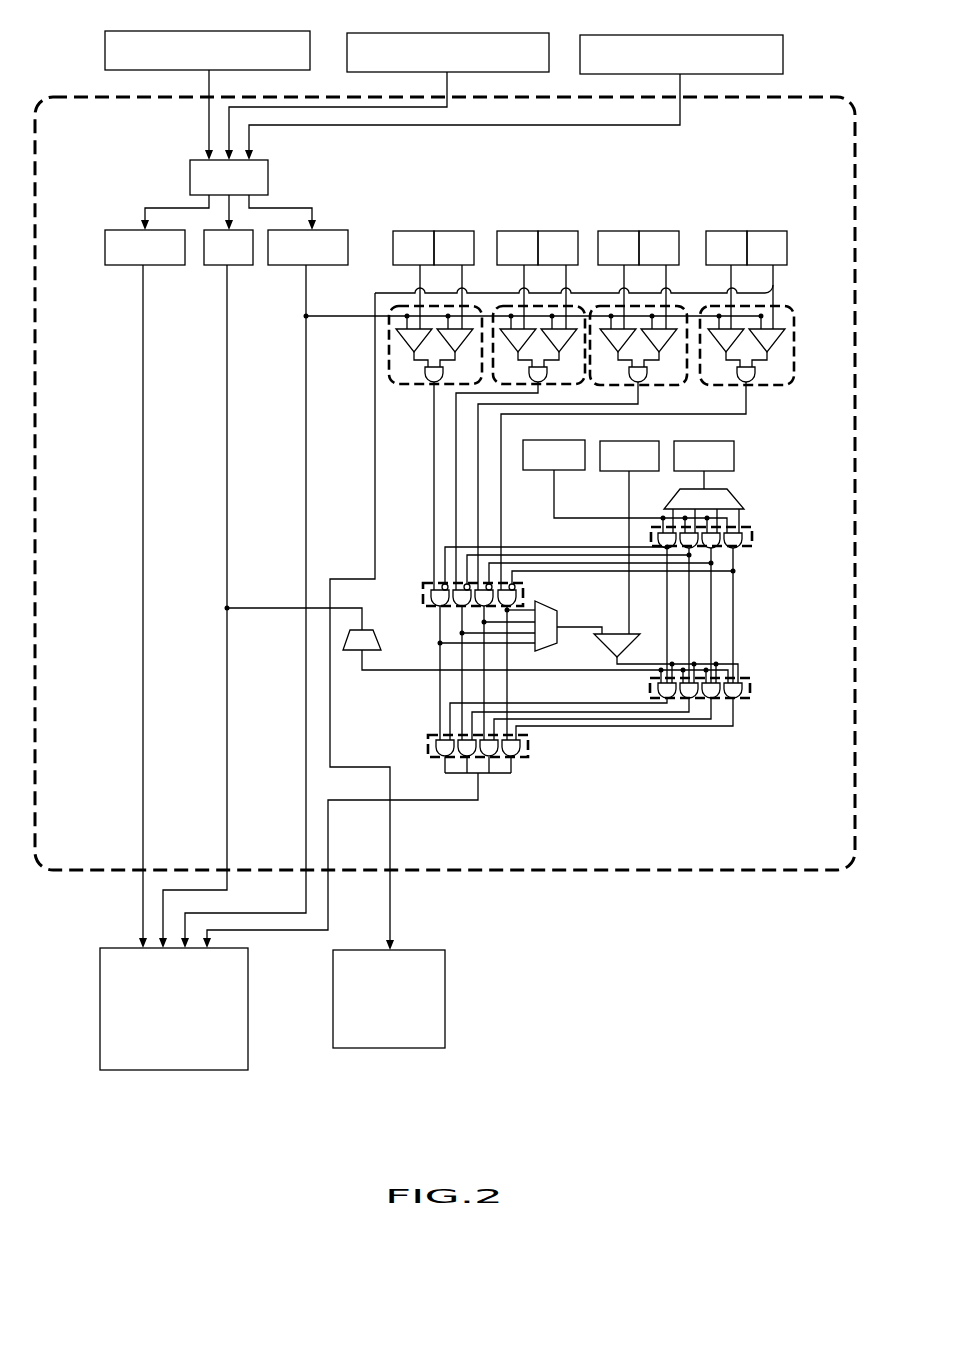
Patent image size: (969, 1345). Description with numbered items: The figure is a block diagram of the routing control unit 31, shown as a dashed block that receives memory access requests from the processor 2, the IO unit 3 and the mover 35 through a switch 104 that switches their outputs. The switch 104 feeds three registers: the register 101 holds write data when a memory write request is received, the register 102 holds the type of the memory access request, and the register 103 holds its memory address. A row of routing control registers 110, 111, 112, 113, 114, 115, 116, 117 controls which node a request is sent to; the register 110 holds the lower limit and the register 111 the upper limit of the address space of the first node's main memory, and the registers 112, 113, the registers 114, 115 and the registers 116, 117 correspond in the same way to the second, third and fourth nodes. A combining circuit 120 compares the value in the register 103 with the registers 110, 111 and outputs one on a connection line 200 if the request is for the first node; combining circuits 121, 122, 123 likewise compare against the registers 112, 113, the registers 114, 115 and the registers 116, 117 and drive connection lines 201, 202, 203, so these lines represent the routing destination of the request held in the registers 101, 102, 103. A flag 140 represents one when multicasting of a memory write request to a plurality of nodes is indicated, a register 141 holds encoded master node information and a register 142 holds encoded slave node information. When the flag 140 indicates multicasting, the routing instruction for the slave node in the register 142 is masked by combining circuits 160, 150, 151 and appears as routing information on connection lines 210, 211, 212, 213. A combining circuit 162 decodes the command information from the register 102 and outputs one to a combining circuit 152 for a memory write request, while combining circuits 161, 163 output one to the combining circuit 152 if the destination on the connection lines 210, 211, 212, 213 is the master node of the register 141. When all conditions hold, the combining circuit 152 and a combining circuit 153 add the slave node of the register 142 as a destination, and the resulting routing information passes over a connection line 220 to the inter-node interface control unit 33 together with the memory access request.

The processor 2 is at (262, 31).
The IO unit 3 is at (500, 31).
The mover 35 is at (695, 33).
The routing control unit 31 is at (838, 97).
The switch 104 is at (190, 175).
The register 101 is at (177, 265).
The register 102 is at (241, 265).
The register 103 is at (330, 265).
The routing control register 110 is at (408, 230).
The routing control register 111 is at (455, 230).
The routing control register 112 is at (512, 230).
The routing control register 113 is at (559, 230).
The routing control register 114 is at (613, 230).
The routing control register 115 is at (660, 230).
The routing control register 116 is at (721, 230).
The routing control register 117 is at (768, 230).
The combining circuit 120 is at (413, 386).
The combining circuit 121 is at (573, 388).
The combining circuit 122 is at (665, 387).
The combining circuit 123 is at (780, 388).
The connection line 200 is at (434, 466).
The connection line 201 is at (456, 499).
The connection line 202 is at (480, 528).
The connection line 203 is at (501, 513).
The flag 140 is at (553, 440).
The register 141 is at (617, 473).
The register 142 is at (736, 457).
The combining circuit 160 is at (738, 498).
The combining circuit 150 is at (752, 546).
The combining circuit 151 is at (425, 582).
The combining circuit 152 is at (752, 698).
The combining circuit 153 is at (525, 760).
The combining circuit 161 is at (552, 613).
The combining circuit 162 is at (367, 630).
The combining circuit 163 is at (638, 632).
The connection line 210 is at (437, 656).
The connection line 211 is at (460, 689).
The connection line 212 is at (488, 697).
The connection line 213 is at (508, 665).
The connection line 220 is at (413, 800).
The inter-node interface control unit 33 is at (252, 995).